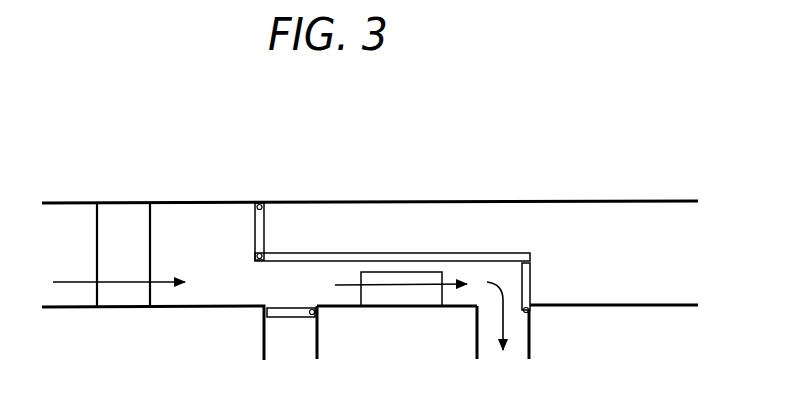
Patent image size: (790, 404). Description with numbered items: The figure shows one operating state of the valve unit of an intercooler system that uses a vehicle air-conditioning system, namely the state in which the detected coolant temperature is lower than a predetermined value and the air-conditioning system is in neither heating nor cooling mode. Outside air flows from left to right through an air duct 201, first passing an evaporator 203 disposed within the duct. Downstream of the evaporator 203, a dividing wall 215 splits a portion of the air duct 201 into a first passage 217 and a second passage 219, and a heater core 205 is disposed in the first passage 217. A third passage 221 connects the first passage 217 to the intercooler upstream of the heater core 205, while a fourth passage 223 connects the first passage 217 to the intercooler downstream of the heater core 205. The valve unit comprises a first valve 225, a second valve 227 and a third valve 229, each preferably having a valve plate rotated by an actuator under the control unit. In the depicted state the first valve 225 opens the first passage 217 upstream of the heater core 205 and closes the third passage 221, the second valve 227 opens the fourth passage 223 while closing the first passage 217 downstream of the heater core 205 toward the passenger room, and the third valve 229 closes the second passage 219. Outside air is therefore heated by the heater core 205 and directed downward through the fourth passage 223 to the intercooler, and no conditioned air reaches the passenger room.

The air duct 201 is at (475, 200).
The evaporator 203 is at (120, 297).
The heater core 205 is at (410, 300).
The dividing wall 215 is at (474, 252).
The first passage 217 is at (305, 294).
The second passage 219 is at (420, 242).
The third passage 221 is at (315, 340).
The fourth passage 223 is at (530, 337).
The first valve 225 is at (280, 317).
The second valve 227 is at (530, 287).
The third valve 229 is at (267, 227).